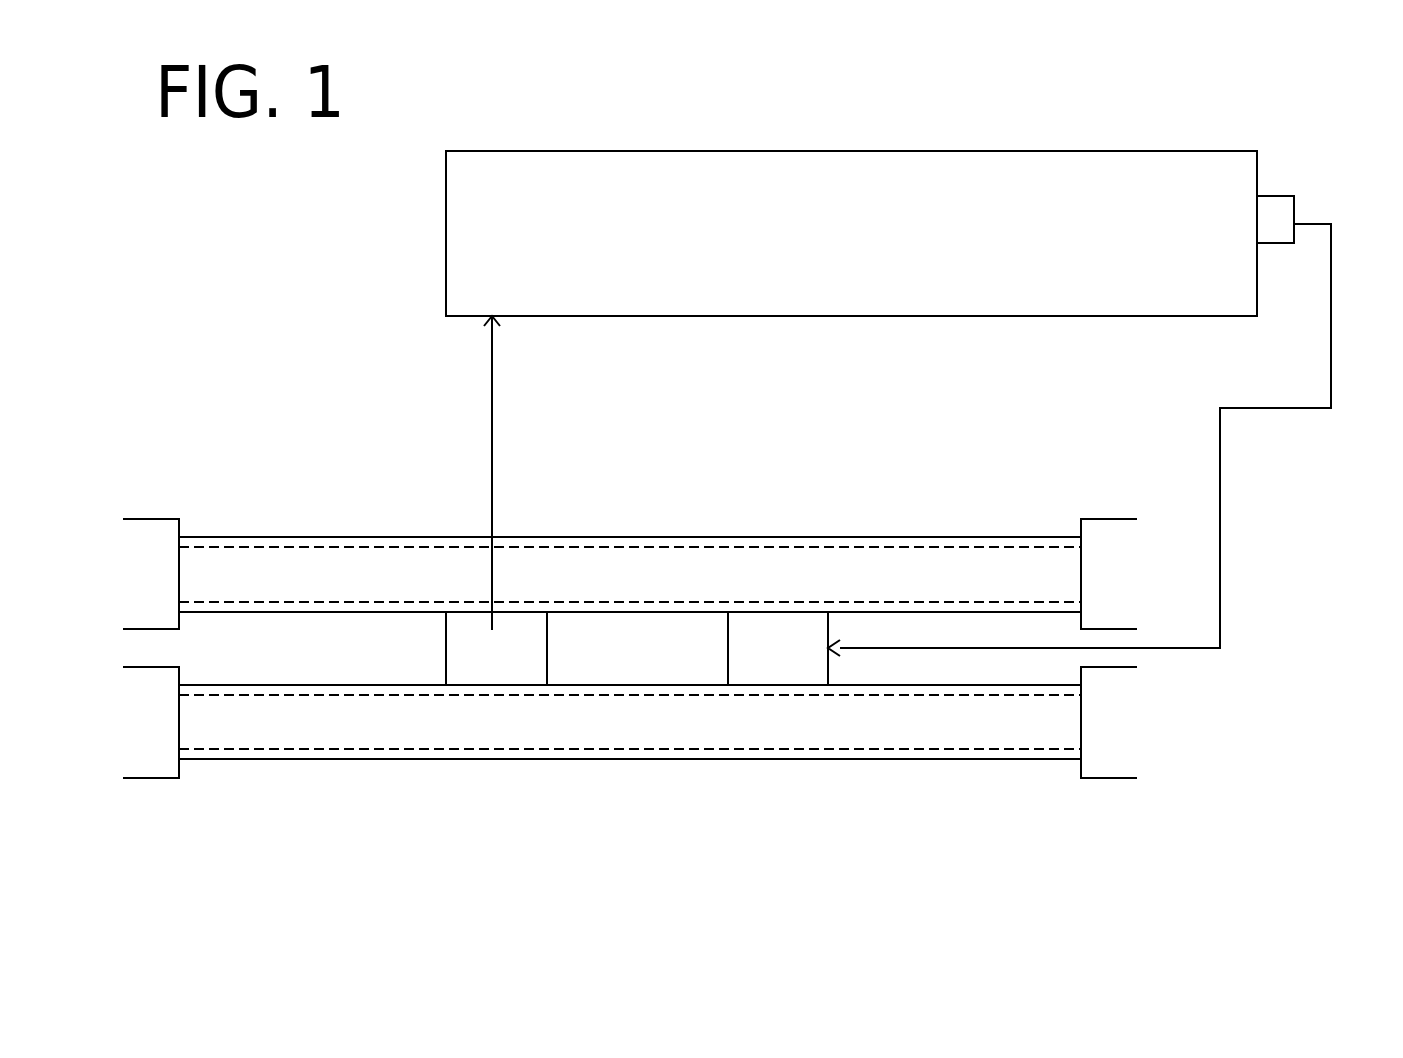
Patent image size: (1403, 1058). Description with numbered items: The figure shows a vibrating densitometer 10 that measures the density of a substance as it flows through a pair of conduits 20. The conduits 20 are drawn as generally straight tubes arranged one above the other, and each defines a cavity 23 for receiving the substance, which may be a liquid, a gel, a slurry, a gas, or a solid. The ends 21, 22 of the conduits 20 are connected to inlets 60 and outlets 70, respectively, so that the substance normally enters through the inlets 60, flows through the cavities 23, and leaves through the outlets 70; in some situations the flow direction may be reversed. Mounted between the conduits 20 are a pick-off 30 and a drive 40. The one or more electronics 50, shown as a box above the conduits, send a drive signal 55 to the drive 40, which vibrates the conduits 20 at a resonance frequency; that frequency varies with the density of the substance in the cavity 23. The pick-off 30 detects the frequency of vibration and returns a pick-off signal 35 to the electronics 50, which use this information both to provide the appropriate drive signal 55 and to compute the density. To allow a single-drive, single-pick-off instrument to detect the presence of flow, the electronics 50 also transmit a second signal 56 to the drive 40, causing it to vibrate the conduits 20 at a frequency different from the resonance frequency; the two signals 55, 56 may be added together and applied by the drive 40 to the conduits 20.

The densitometer 10 is at (1296, 500).
The conduits 20 is at (657, 537).
The ends of the conduits 21 is at (1026, 491).
The ends of the conduits 22 is at (234, 490).
The cavities 23 is at (898, 575).
The pick-off 30 is at (518, 648).
The pick-off signal 35 is at (492, 389).
The drive 40 is at (788, 640).
The electronics 50 is at (1026, 187).
The drive signal 55 is at (1276, 196).
The second signal 56 is at (1276, 243).
The inlets 60 is at (1101, 519).
The outlets 70 is at (142, 519).